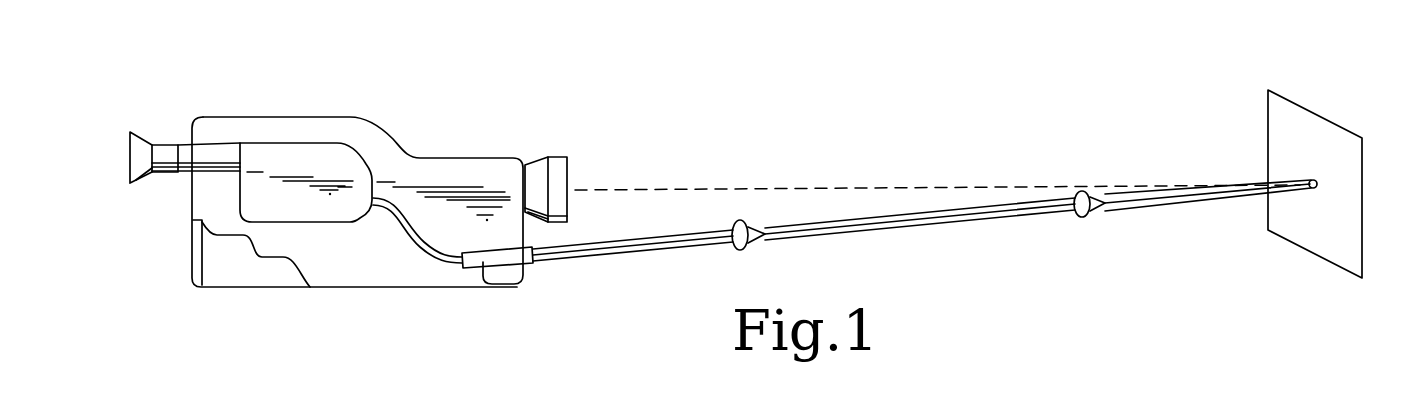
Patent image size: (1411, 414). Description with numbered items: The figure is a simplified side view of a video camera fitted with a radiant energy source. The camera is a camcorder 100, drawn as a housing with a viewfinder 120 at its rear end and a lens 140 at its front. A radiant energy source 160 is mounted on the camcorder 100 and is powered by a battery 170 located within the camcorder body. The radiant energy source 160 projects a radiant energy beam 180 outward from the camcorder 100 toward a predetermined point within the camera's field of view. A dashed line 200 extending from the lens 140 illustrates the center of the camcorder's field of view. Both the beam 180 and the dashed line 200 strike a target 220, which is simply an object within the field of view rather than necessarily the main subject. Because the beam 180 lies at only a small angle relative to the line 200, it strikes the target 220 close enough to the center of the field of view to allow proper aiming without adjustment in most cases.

The camcorder 100 is at (278, 127).
The viewfinder 120 is at (150, 143).
The lens 140 is at (567, 167).
The radiant energy source 160 is at (490, 283).
The battery 170 is at (233, 278).
The radiant energy beam 180 is at (1003, 217).
The dashed line 200 is at (790, 188).
The target 220 is at (1293, 125).